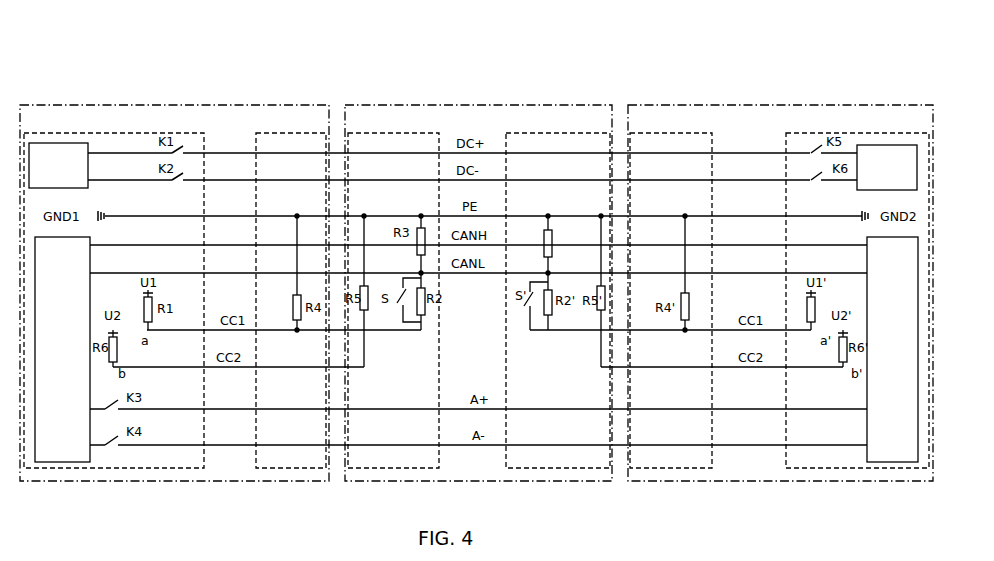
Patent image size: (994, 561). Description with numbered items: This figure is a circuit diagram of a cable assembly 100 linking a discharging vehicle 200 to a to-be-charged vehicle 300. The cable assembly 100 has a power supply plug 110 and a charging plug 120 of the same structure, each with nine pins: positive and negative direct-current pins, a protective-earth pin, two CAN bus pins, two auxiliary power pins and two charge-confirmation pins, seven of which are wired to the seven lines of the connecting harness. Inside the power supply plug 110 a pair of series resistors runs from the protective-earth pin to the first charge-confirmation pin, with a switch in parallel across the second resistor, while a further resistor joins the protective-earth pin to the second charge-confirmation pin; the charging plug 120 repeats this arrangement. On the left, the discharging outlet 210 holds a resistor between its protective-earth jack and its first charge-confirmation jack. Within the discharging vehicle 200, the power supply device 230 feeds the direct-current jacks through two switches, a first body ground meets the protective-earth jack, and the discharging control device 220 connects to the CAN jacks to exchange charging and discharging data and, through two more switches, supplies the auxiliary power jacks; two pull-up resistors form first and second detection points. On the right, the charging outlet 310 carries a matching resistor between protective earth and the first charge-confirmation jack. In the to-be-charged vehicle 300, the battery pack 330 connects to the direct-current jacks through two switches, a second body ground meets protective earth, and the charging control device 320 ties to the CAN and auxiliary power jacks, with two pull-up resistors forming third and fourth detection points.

The charging connection device 100 is at (478, 117).
The power supply plug 110 is at (393, 138).
The charging plug 120 is at (570, 138).
The discharging vehicle 200 is at (165, 118).
The discharging outlet 210 is at (283, 138).
The discharging control device 220 is at (62, 349).
The power supply device 230 is at (58, 165).
The to-be-charged vehicle 300 is at (745, 120).
The charging outlet 310 is at (660, 138).
The charging control device 320 is at (892, 349).
The battery pack 330 is at (887, 167).